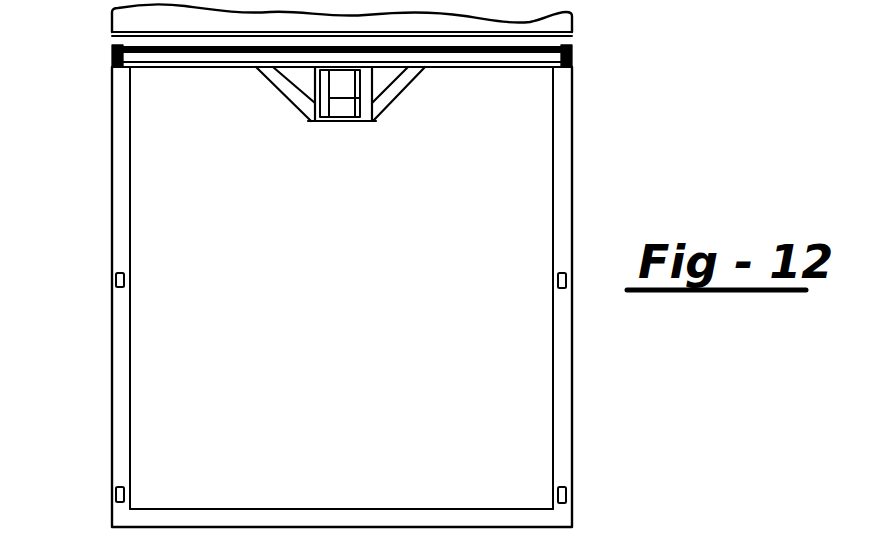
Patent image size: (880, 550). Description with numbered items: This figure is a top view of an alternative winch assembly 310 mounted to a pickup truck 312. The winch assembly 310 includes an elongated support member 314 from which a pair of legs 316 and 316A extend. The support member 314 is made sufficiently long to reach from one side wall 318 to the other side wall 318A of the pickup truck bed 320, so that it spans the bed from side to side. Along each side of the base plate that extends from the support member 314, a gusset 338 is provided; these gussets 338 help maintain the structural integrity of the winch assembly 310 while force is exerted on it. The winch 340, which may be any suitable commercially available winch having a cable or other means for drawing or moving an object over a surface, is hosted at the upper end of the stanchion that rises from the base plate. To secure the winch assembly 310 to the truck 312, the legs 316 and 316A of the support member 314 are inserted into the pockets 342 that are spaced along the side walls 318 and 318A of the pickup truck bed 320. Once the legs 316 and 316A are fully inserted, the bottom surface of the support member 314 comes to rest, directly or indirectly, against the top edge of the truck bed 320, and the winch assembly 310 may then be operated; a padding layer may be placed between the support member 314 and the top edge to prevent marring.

The winch assembly 310 is at (360, 263).
The pickup truck 312 is at (342, 297).
The elongated support member 314 is at (493, 57).
The leg 316 is at (112, 38).
The leg 316A is at (572, 40).
The side wall 318 is at (126, 158).
The side wall 318A is at (565, 166).
The pickup truck bed 320 is at (130, 416).
The gusset 338 is at (412, 83).
The winch 340 is at (312, 87).
The pockets 342 is at (126, 280).